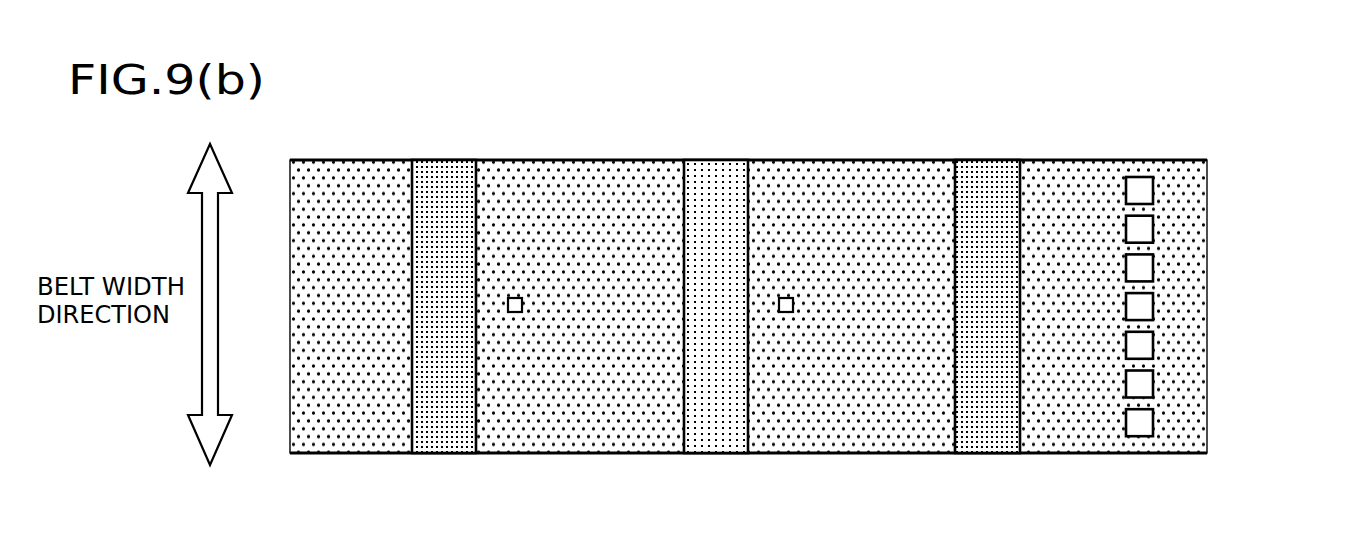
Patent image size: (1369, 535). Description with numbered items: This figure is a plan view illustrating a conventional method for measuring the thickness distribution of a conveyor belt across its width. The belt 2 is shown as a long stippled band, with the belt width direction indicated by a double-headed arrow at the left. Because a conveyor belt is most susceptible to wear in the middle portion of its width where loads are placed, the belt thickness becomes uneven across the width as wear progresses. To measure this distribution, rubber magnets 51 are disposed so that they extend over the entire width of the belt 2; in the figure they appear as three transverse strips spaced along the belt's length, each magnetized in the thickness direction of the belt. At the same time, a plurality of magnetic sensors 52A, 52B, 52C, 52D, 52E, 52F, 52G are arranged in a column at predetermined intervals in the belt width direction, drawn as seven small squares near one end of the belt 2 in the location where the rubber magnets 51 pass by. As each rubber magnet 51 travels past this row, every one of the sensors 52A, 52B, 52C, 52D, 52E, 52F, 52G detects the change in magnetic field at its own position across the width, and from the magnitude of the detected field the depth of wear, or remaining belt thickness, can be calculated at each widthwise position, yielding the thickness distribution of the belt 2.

The intermediate transfer belt 2 is at (841, 182).
The rubber magnet 51 is at (1020, 122).
The magnetic sensor 52A is at (1140, 185).
The magnetic sensor 52B is at (1140, 222).
The magnetic sensor 52C is at (1140, 260).
The magnetic sensor 52D is at (1140, 300).
The magnetic sensor 52E is at (1142, 342).
The magnetic sensor 52F is at (1130, 383).
The magnetic sensor 52G is at (1138, 422).